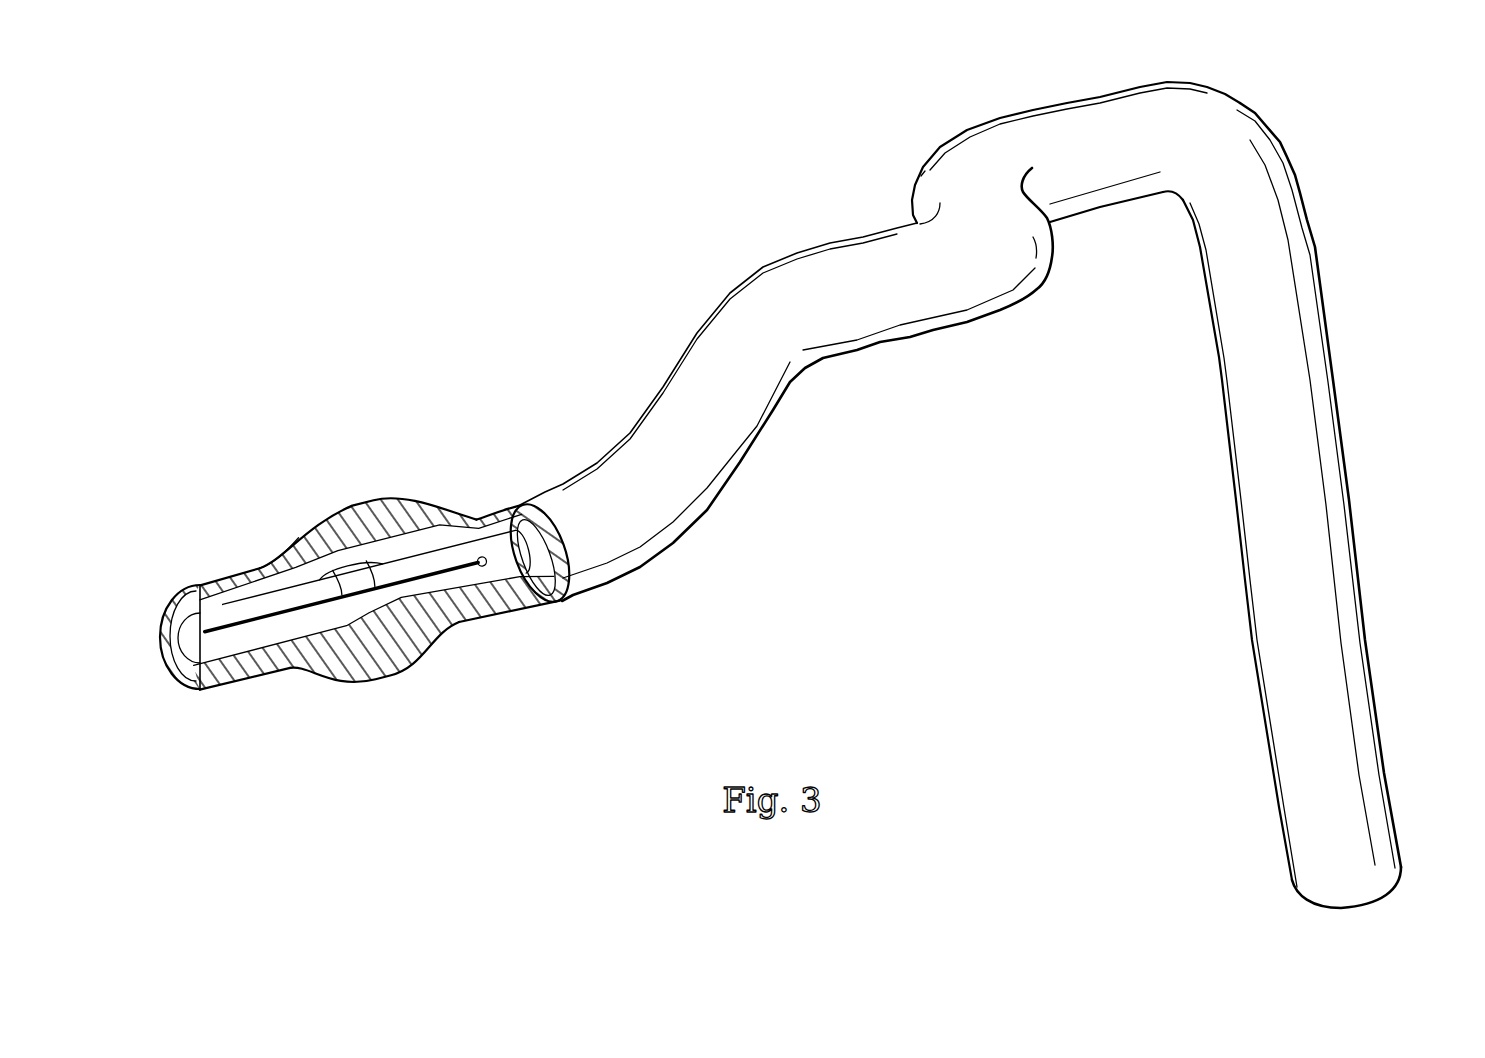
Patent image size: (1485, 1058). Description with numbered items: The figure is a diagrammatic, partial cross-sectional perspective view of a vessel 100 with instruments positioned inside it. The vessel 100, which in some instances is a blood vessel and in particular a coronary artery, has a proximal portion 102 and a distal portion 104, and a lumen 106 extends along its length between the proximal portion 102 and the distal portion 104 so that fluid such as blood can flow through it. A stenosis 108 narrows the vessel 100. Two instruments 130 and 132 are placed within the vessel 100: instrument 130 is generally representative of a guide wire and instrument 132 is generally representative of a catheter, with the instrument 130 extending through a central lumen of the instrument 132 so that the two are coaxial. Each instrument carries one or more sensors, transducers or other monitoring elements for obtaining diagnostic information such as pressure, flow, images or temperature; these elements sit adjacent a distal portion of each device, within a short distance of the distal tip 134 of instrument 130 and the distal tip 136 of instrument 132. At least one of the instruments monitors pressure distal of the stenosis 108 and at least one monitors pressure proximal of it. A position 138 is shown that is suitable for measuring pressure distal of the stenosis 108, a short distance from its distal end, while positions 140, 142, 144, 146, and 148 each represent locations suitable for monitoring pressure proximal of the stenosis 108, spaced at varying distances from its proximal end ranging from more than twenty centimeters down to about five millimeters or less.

The vessel 100 is at (563, 282).
The proximal portion 102 is at (1388, 775).
The distal portion 104 is at (211, 563).
The lumen 106 is at (172, 662).
The stenosis 108 is at (361, 488).
The instrument 130 is at (324, 616).
The instrument 132 is at (526, 566).
The distal tip 134 is at (204, 633).
The distal tip 136 is at (482, 558).
The position 138 is at (266, 541).
The position 140 is at (515, 485).
The position 142 is at (757, 250).
The position 144 is at (1028, 103).
The position 146 is at (1328, 246).
The position 148 is at (1270, 882).